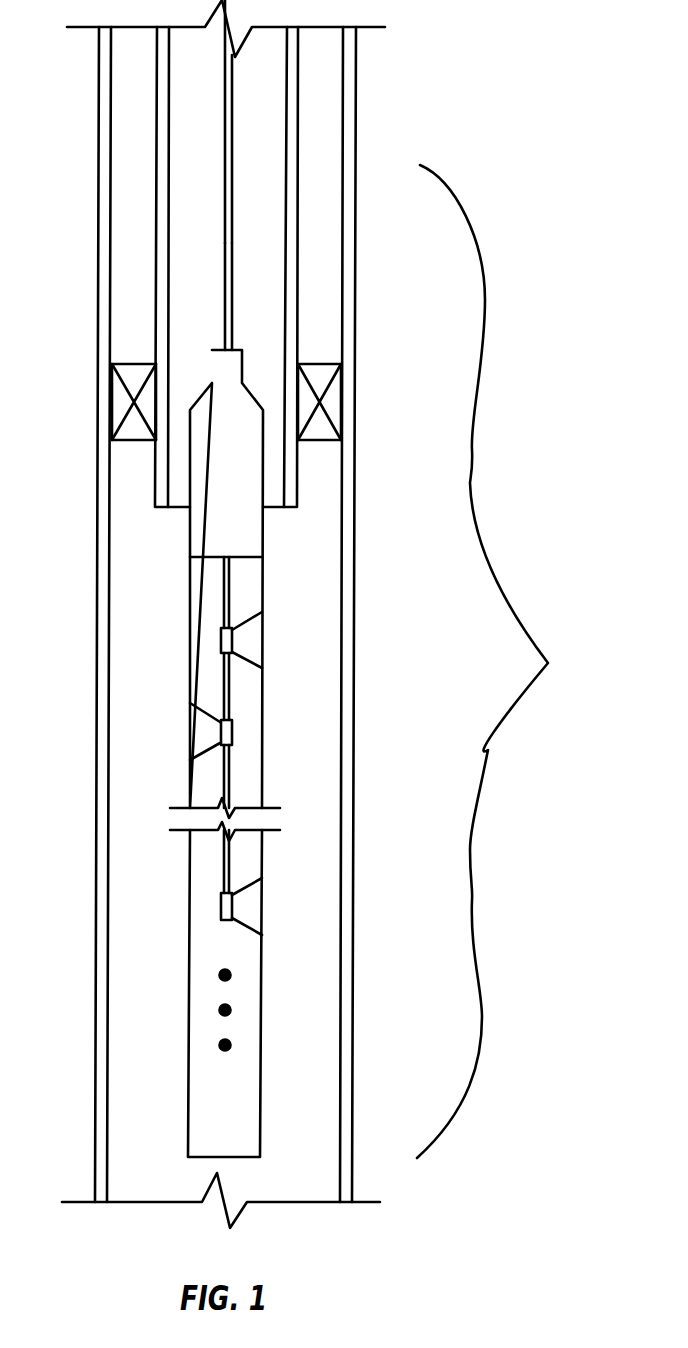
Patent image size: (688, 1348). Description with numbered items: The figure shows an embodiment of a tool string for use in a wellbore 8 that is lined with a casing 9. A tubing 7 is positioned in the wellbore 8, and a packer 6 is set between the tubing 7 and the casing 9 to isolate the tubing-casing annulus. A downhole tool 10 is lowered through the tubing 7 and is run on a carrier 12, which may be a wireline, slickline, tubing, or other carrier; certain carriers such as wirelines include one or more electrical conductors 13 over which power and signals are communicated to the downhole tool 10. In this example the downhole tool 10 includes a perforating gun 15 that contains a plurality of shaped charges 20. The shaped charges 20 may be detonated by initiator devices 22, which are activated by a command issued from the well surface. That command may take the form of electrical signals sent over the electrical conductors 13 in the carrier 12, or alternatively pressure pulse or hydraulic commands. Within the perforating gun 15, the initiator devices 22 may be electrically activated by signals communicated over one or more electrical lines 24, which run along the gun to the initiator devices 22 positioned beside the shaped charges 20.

The packer 6 is at (330, 403).
The tubing 7 is at (290, 315).
The wellbore 8 is at (123, 1207).
The casing 9 is at (347, 525).
The downhole tool 10 is at (502, 661).
The carrier 12 is at (225, 265).
The electrical conductor 13 is at (228, 243).
The perforating gun 15 is at (263, 997).
The shaped charge 20 is at (245, 640).
The initiator device 22 is at (220, 638).
The electrical line 24 is at (228, 598).